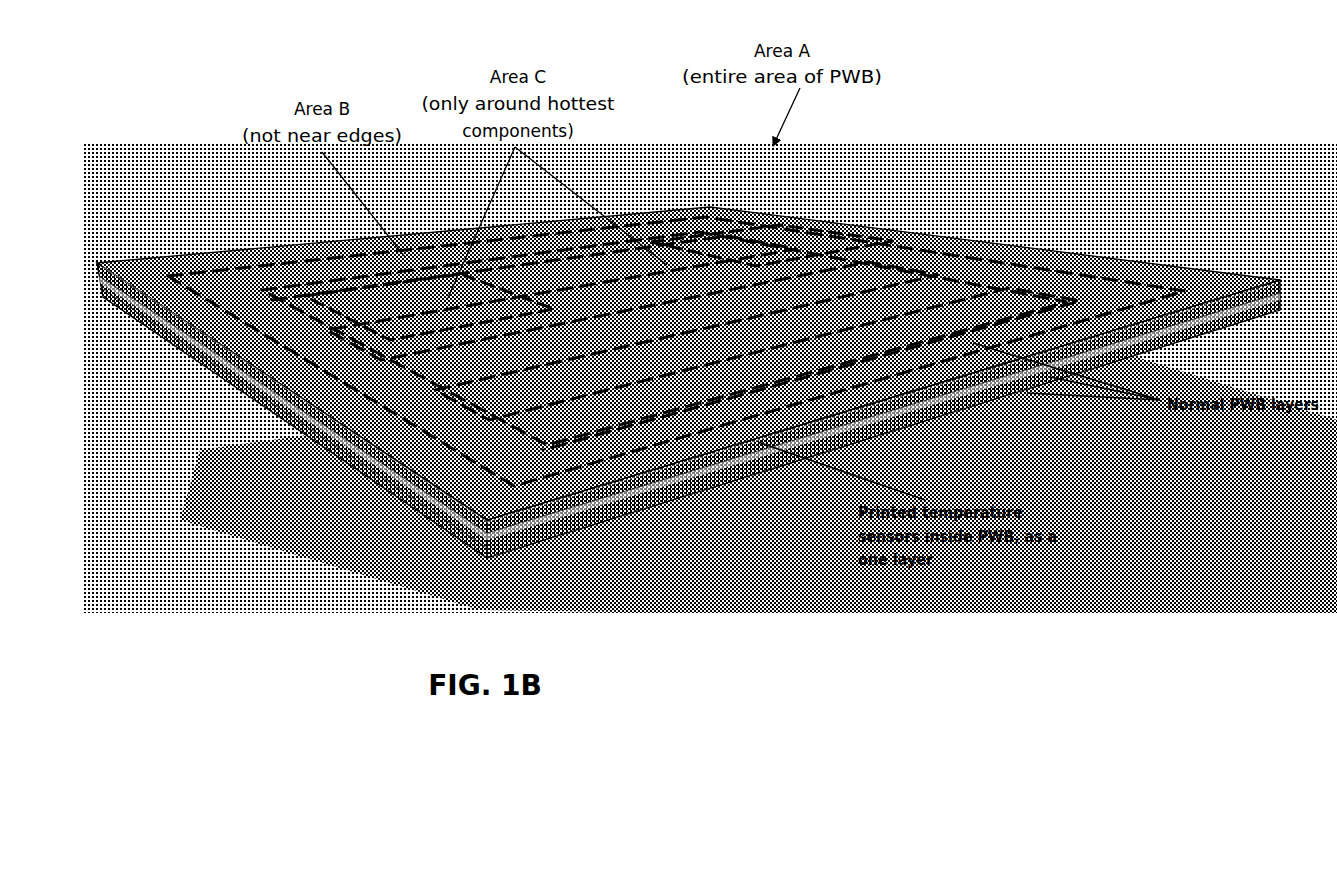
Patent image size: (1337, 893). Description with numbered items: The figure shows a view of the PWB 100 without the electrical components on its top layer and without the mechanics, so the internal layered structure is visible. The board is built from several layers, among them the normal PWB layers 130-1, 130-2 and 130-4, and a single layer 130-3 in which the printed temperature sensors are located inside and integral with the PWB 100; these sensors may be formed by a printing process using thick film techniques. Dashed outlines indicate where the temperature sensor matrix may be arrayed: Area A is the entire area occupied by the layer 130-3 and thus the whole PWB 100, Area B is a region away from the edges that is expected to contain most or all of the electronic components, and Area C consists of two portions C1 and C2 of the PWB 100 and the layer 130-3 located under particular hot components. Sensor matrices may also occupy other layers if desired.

The PWB 100 is at (84, 281).
The layer 130-1 is at (376, 483).
The layer 130-2 is at (442, 509).
The layer 130-3 is at (572, 494).
The layer 130-4 is at (160, 264).
The portion C1 is at (375, 307).
The portion C2 is at (830, 250).